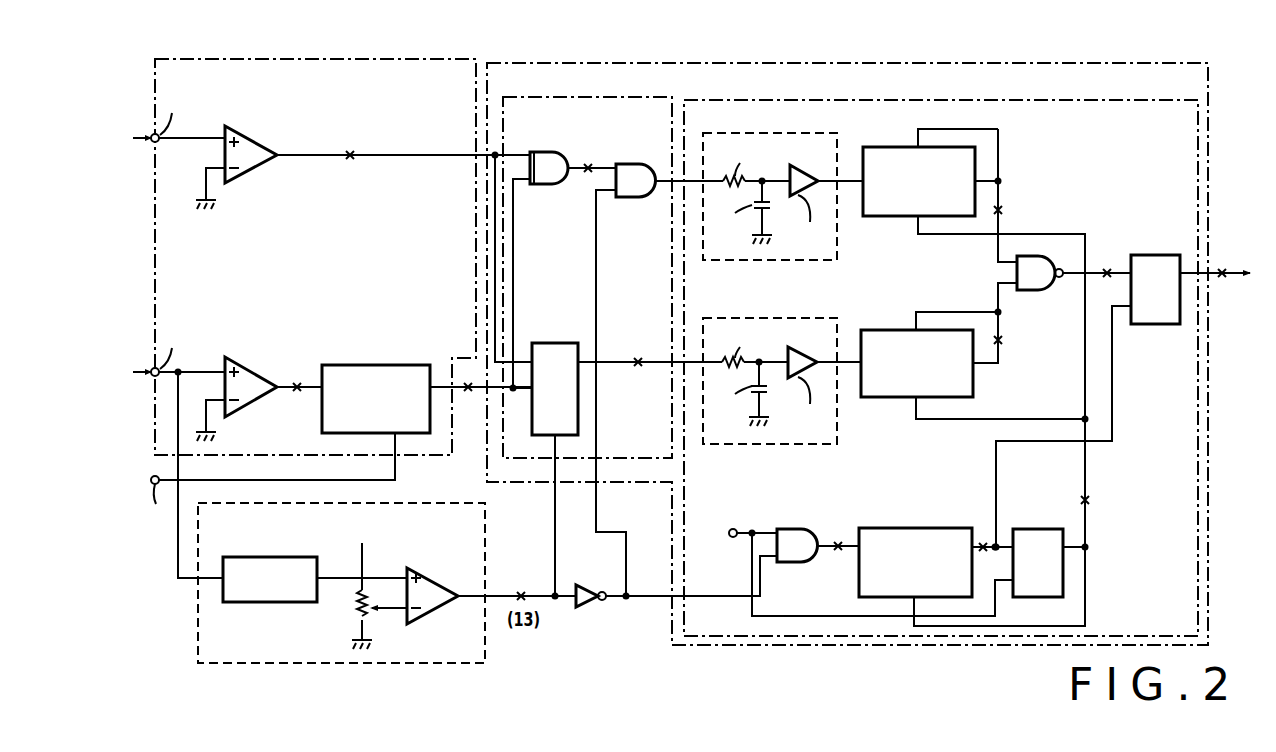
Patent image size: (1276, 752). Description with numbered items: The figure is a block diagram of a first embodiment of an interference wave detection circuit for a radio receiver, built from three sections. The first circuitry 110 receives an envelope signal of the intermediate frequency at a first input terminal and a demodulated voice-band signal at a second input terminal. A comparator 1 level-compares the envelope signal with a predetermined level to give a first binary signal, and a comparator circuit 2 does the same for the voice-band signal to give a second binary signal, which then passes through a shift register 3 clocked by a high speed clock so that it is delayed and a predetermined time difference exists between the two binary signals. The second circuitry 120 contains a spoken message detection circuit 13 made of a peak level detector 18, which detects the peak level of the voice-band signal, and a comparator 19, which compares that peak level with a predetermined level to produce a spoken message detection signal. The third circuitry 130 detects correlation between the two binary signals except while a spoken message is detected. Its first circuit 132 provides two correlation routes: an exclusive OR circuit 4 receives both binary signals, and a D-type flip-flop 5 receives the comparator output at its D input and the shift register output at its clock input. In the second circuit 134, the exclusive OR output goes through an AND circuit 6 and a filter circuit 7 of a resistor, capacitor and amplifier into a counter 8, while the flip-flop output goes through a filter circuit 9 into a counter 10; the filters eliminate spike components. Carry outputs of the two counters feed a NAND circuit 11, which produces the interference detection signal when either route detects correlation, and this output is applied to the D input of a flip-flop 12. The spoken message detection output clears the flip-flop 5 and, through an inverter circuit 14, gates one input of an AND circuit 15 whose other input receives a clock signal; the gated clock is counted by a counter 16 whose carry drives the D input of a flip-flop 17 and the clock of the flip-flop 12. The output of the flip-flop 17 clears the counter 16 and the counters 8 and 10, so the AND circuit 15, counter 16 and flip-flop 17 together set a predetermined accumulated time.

The comparator 1 is at (250, 137).
The comparator circuit 2 is at (250, 367).
The shift register 3 is at (403, 365).
The exclusive OR circuit 4 is at (548, 152).
The D-type flip-flop 5 is at (556, 343).
The AND circuit 6 is at (628, 164).
The filter circuit 7 is at (810, 133).
The counter 8 is at (885, 147).
The filter circuit 9 is at (800, 316).
The counter 10 is at (890, 330).
The NAND circuit 11 is at (1043, 256).
The flip-flop 12 is at (1157, 254).
The spoken message detection circuit 13 is at (450, 502).
The inverter circuit 14 is at (590, 585).
The AND circuit 15 is at (790, 529).
The counter 16 is at (940, 528).
The flip-flop 17 is at (1038, 529).
The peak level detector 18 is at (295, 557).
The comparator 19 is at (432, 581).
The first circuitry 110 is at (413, 59).
The second circuitry 120 is at (331, 543).
The third circuitry 130 is at (1088, 63).
The first circuit 132 is at (620, 97).
The second circuit 134 is at (1100, 100).